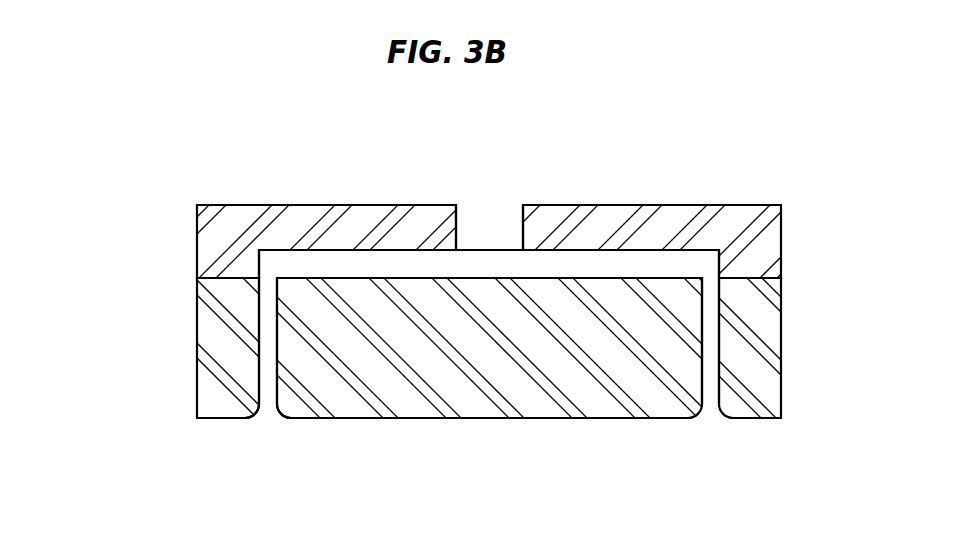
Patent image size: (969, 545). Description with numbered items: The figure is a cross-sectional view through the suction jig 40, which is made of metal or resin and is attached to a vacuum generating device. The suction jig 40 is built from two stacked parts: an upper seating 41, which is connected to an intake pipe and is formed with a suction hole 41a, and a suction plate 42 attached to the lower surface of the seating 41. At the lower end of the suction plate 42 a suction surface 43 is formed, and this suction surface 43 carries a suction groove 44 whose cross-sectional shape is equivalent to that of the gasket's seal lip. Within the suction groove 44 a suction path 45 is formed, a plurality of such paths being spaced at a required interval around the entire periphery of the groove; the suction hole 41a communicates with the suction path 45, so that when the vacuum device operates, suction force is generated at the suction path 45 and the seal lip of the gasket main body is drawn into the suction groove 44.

The suction jig 40 is at (170, 310).
The seating 41 is at (762, 242).
The suction hole 41a is at (483, 235).
The suction plate 42 is at (762, 330).
The suction surface 43 is at (488, 418).
The suction groove 44 is at (263, 417).
The suction path 45 is at (268, 335).